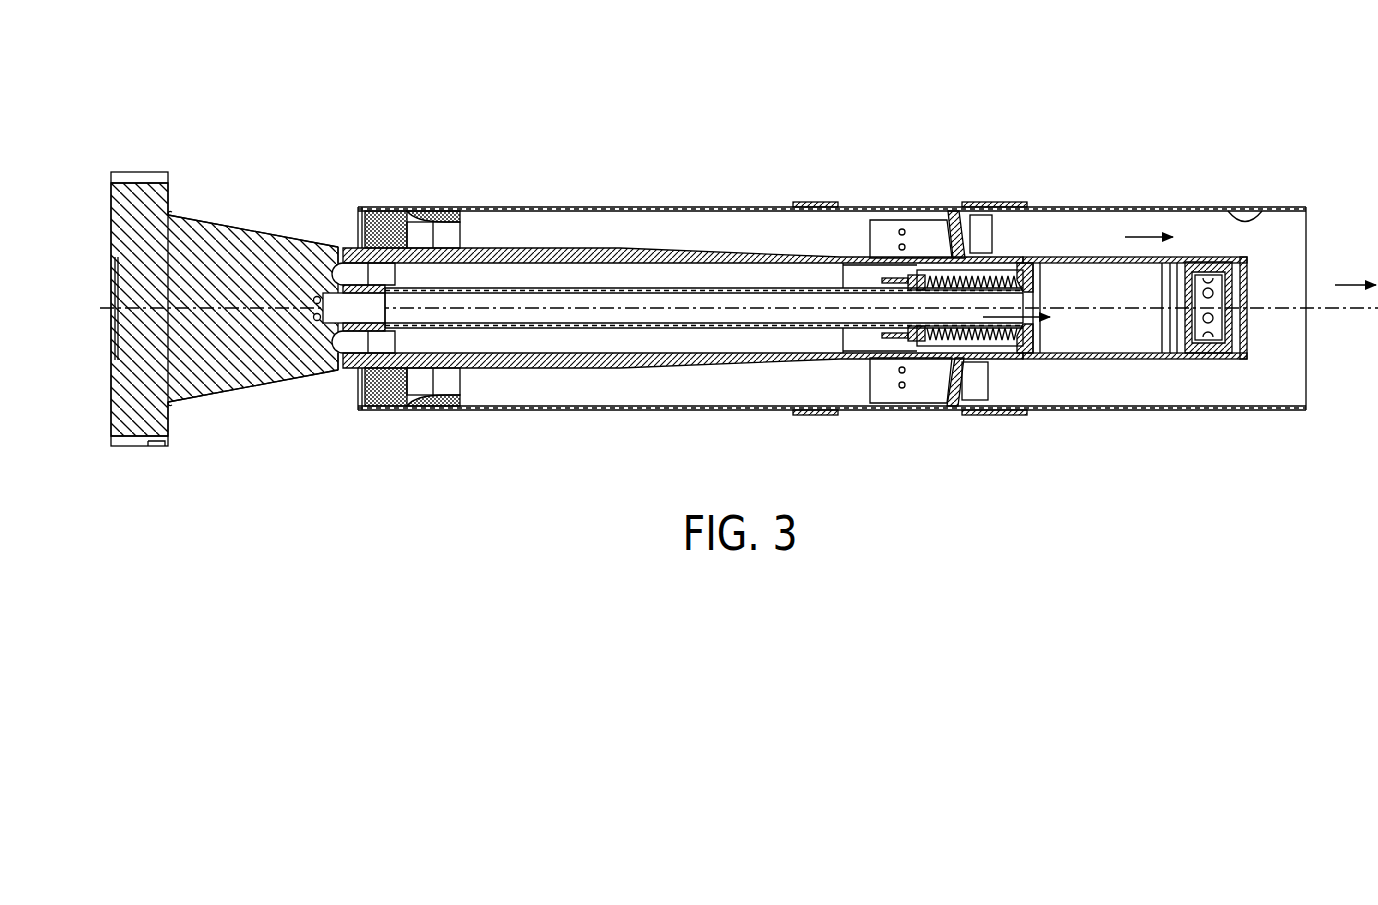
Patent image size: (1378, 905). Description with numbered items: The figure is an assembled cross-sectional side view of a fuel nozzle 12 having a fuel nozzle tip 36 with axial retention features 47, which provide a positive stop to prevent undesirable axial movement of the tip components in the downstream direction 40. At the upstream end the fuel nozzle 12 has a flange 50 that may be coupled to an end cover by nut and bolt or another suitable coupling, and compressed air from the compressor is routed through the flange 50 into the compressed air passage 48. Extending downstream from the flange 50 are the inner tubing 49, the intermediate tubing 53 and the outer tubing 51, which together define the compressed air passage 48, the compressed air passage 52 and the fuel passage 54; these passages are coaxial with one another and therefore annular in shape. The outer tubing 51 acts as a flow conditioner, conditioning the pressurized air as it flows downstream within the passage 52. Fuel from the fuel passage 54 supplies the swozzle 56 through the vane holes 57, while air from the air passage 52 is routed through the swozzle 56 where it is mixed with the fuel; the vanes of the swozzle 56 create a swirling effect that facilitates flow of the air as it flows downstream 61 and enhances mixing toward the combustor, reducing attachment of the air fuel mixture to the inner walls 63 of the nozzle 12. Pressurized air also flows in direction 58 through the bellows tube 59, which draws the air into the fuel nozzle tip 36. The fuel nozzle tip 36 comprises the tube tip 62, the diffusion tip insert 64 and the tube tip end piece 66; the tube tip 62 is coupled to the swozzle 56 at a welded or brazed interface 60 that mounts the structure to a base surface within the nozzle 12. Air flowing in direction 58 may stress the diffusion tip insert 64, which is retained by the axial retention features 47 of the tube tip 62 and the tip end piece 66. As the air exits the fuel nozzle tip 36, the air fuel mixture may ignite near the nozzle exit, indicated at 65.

The fuel nozzle 12 is at (615, 90).
The fuel nozzle tip 36 is at (1173, 360).
The downstream direction 40 is at (1358, 285).
The axial retention features 47 is at (1190, 362).
The compressed air passage 48 is at (410, 308).
The inner tubing 49 is at (761, 289).
The flange 50 is at (147, 380).
The outer tubing 51 is at (578, 207).
The compressed air passage 52 is at (587, 384).
The intermediate tubing 53 is at (714, 253).
The fuel passage 54 is at (483, 345).
The swozzle 56 is at (977, 232).
The vane holes 57 is at (903, 245).
The direction of pressurized air flow 58 is at (997, 327).
The bellows tube 59 is at (947, 276).
The interface 60 is at (1038, 362).
The downstream flow 61 is at (1143, 235).
The tube tip 62 is at (1100, 257).
The inner walls 63 is at (1238, 255).
The diffusion tip insert 64 is at (1212, 329).
The ignition location 65 is at (1322, 322).
The tube tip end piece 66 is at (1212, 255).